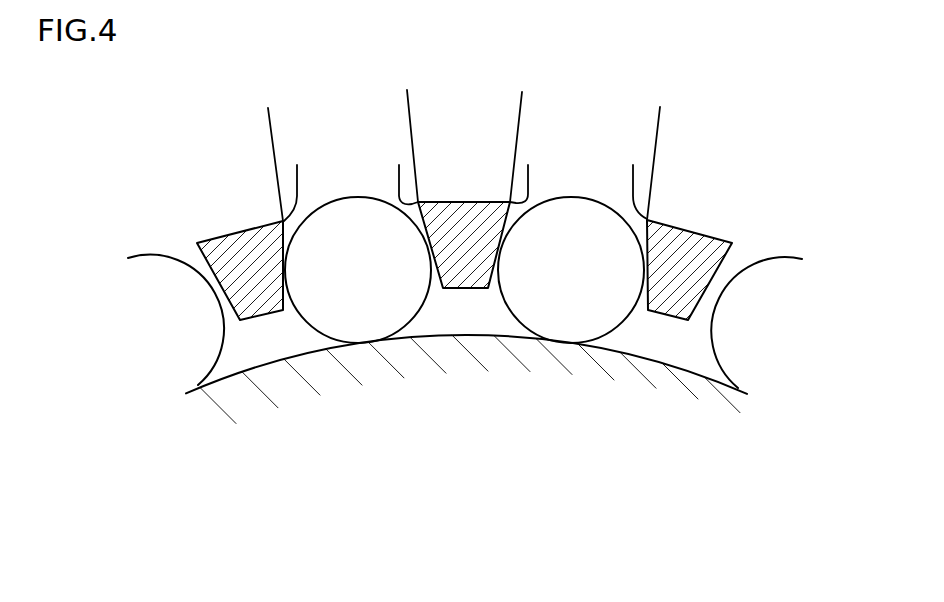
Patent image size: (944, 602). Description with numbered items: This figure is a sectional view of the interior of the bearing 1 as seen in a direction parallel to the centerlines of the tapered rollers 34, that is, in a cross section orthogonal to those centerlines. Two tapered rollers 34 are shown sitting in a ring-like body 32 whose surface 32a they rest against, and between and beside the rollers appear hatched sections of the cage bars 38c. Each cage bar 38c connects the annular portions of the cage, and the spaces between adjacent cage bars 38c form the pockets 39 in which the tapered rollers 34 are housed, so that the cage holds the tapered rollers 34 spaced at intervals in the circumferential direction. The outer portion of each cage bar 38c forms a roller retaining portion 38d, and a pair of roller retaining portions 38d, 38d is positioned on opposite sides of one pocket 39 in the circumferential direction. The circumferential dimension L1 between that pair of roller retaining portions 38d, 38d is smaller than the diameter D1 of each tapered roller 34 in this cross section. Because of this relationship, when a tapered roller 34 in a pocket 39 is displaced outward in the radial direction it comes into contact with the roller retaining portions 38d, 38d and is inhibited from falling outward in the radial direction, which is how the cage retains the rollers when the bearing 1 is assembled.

The power transmission device 1 is at (203, 445).
The base body 32 is at (447, 350).
The surface of base body 32a is at (697, 373).
The tapered roller 34 is at (363, 303).
The cage bar 38c is at (245, 258).
The roller retaining portion 38d is at (297, 165).
The pocket 39 is at (310, 346).
The circumferential dimension L1 is at (391, 94).
The diameter D1 is at (419, 258).